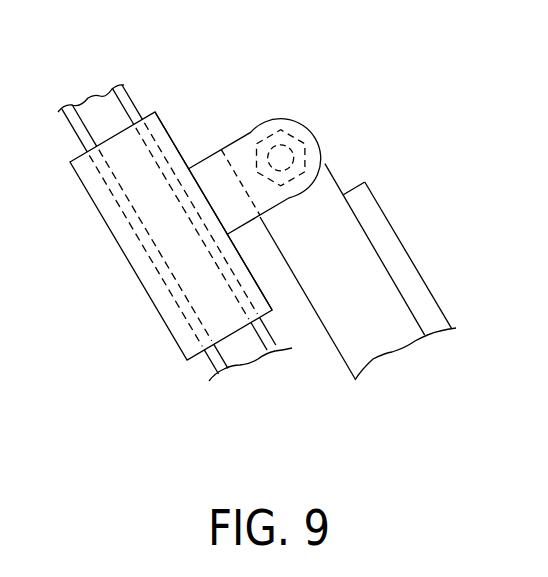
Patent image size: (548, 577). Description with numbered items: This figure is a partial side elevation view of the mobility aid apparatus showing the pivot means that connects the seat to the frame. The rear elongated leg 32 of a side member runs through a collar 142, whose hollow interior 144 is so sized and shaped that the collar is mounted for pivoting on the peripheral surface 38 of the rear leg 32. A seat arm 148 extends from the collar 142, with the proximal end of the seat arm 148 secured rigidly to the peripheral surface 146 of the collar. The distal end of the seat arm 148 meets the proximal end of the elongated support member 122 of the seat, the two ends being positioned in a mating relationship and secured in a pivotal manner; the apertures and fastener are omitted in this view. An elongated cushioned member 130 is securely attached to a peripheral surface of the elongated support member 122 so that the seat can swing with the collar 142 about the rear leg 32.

The rear elongated leg 32 is at (107, 108).
The peripheral surface 38 is at (212, 374).
The elongated support member 122 is at (368, 326).
The elongated cushioned member 130 is at (387, 237).
The collar 142 is at (166, 129).
The hollow interior 144 is at (132, 229).
The peripheral surface 146 is at (243, 263).
The seat arm 148 is at (247, 141).